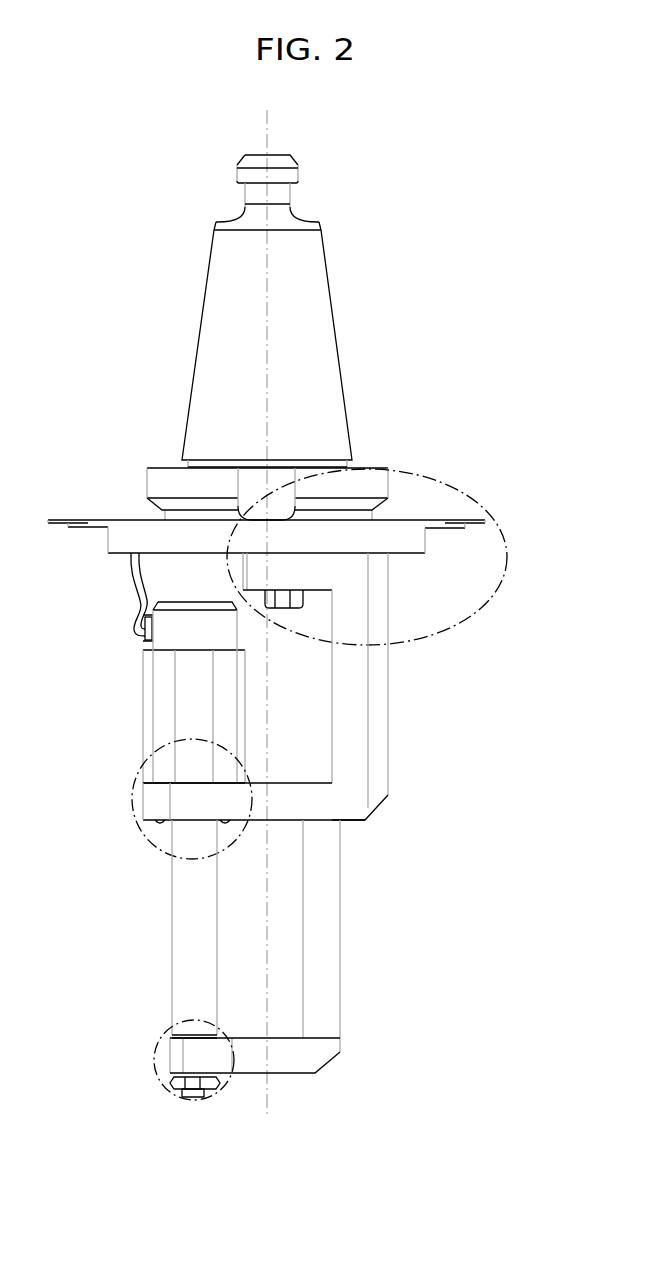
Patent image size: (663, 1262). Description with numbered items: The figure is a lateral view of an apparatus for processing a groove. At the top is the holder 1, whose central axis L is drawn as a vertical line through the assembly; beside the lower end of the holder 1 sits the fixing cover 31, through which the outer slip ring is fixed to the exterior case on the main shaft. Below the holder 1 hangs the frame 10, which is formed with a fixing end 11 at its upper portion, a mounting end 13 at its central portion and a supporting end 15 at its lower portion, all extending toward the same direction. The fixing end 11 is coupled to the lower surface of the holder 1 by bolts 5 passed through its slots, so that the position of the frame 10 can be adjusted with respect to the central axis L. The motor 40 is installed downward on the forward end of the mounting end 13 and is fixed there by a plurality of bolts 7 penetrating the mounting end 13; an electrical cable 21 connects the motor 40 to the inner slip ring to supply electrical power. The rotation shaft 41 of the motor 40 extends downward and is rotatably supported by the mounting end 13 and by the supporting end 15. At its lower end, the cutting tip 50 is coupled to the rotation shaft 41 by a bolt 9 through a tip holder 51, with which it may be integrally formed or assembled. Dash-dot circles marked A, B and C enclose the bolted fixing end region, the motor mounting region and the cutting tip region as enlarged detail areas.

The holder 1 is at (318, 305).
The central axis L is at (267, 361).
The fixing cover 31 is at (124, 530).
The fixing end 11 is at (305, 570).
The detail region A is at (507, 557).
The bolts 5 is at (288, 608).
The frame 10 is at (330, 862).
The electrical cable 21 is at (146, 604).
The motor 40 is at (160, 684).
The mounting end 13 is at (207, 818).
The bolts 7 is at (160, 822).
The detail region B is at (132, 800).
The rotation shaft 41 is at (185, 930).
The supporting end 15 is at (288, 1063).
The detail region C is at (157, 1062).
The bolt 9 is at (190, 1097).
The tip holder 51 is at (206, 1097).
The cutting tip 50 is at (180, 1080).